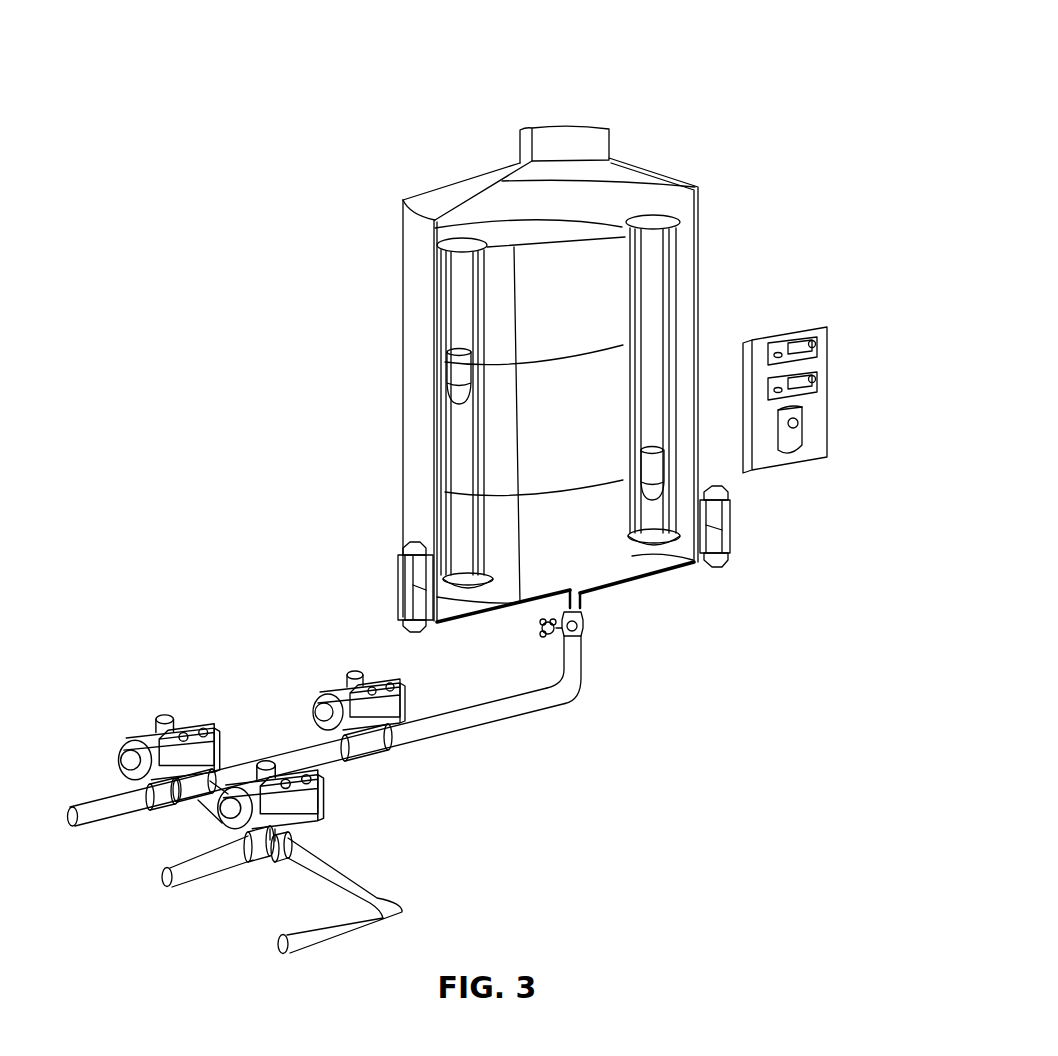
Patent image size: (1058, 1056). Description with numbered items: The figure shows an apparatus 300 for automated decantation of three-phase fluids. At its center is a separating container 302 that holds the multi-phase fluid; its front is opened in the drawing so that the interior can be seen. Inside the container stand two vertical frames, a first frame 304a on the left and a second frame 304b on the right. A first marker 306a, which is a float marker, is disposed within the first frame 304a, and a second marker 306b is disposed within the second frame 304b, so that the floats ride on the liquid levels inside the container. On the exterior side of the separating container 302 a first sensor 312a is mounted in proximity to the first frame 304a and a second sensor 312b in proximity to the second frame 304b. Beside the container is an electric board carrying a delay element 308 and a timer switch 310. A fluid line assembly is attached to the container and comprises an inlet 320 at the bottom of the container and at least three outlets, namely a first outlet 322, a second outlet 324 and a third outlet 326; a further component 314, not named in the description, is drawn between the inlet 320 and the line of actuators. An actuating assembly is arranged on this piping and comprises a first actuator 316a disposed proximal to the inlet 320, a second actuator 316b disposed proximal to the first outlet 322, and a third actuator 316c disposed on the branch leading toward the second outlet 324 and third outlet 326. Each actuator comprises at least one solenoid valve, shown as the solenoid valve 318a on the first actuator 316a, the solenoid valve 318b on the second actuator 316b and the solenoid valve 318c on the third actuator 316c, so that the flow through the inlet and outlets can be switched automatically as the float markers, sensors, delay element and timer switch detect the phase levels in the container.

The apparatus for automated decantation of three-phase fluids 300 is at (696, 71).
The separating container 302 is at (572, 140).
The first frame 304a is at (443, 313).
The second frame 304b is at (678, 277).
The first marker 306a is at (450, 367).
The second marker 306b is at (680, 550).
The delay element 308 is at (817, 390).
The timer switch 310 is at (800, 443).
The first sensor 312a is at (403, 583).
The second sensor 312b is at (732, 523).
The outlet pipe 314 is at (552, 637).
The first actuator 316a is at (369, 696).
The second actuator 316b is at (172, 718).
The third actuator 316c is at (326, 776).
The solenoid valve 318a is at (393, 700).
The solenoid valve 318b is at (200, 730).
The solenoid valve 318c is at (318, 800).
The inlet 320 is at (583, 635).
The first outlet 322 is at (65, 835).
The second outlet 324 is at (168, 888).
The third outlet 326 is at (282, 958).